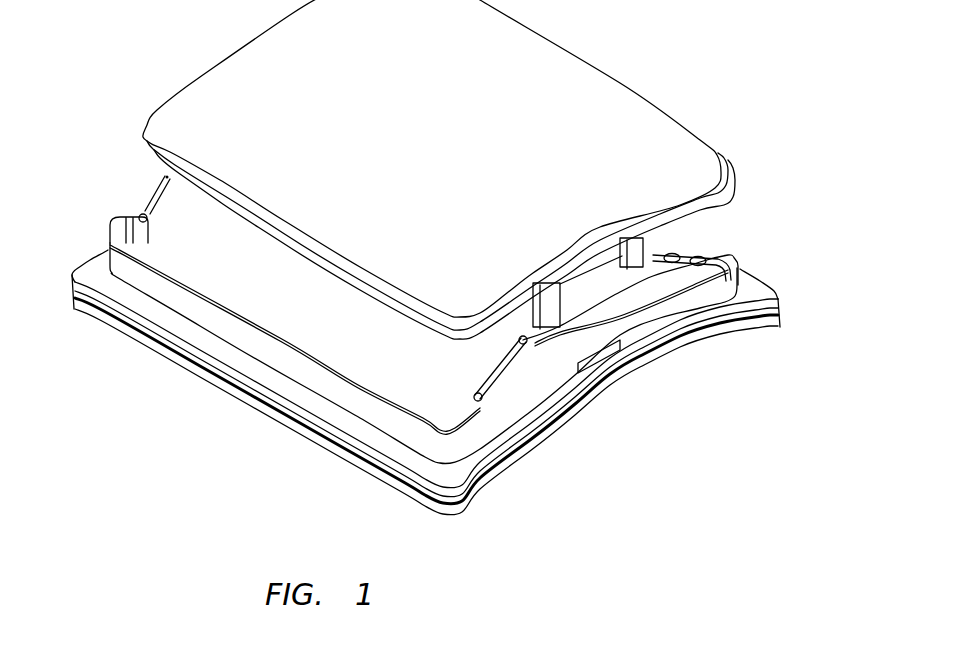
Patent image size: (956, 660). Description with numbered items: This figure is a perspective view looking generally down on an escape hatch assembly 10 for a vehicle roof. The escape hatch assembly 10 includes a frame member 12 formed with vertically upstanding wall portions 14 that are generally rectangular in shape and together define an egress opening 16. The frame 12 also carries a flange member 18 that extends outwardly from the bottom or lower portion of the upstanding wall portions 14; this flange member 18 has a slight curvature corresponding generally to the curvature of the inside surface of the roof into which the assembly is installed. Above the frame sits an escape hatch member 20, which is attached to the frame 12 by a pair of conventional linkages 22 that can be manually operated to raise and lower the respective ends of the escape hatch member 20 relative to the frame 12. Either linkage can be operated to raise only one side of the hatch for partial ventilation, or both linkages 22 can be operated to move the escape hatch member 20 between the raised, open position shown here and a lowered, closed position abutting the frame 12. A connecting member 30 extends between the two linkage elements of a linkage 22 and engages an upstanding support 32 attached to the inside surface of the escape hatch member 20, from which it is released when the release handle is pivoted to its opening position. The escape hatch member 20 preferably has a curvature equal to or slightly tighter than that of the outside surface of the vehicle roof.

The escape hatch assembly 10 is at (112, 192).
The frame member 12 is at (792, 273).
The upstanding wall portions 14 is at (698, 307).
The egress opening 16 is at (637, 304).
The flange member 18 is at (512, 430).
The escape hatch member 20 is at (680, 148).
The linkages 22 is at (157, 188).
The connecting member 30 is at (588, 303).
The upstanding support 32 is at (640, 258).